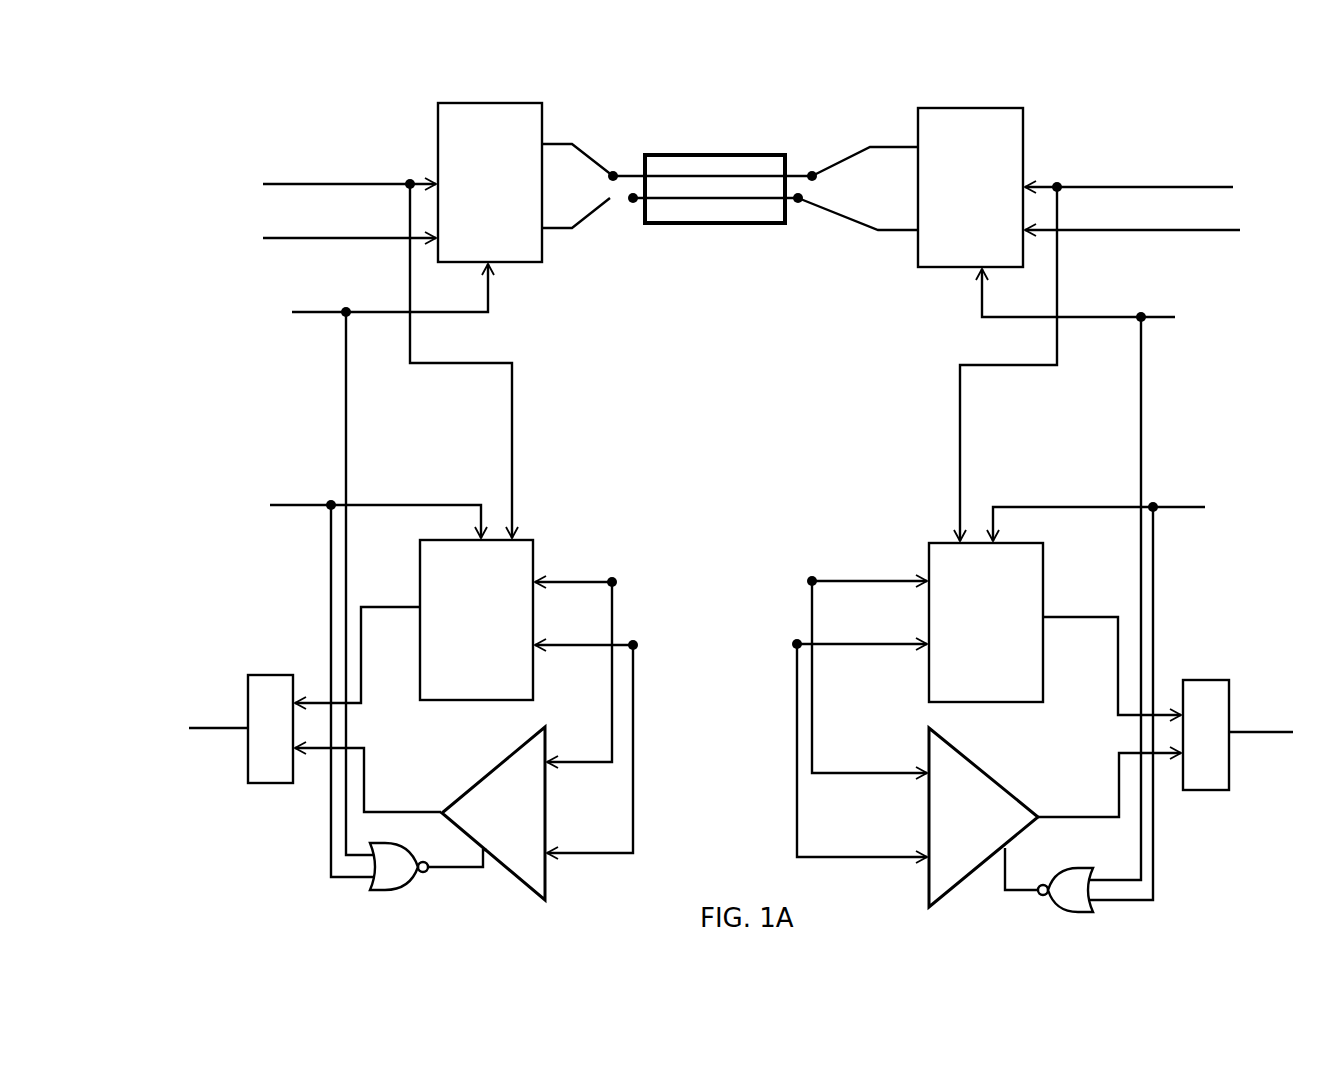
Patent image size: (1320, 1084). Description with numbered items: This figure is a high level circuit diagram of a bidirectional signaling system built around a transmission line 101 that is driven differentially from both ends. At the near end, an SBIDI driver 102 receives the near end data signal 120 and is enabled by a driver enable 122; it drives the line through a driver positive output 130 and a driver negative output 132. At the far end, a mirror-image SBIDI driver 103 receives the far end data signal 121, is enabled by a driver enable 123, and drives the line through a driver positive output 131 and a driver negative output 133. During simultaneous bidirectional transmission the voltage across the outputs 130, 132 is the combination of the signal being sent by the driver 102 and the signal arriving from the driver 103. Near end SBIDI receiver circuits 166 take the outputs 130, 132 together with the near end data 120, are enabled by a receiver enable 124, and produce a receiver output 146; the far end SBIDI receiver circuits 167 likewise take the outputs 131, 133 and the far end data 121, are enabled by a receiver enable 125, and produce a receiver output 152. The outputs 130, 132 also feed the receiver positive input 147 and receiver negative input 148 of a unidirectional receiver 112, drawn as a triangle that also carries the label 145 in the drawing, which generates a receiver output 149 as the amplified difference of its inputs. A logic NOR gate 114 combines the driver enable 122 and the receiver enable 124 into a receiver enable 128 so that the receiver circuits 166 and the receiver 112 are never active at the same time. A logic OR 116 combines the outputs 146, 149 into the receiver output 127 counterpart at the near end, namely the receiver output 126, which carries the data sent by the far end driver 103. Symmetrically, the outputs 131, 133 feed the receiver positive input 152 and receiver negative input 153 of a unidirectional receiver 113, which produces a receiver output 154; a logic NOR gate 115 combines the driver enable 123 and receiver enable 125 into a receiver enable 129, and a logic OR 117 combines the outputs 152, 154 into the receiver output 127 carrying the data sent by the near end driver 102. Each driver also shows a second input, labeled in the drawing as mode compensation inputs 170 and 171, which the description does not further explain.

The transmission line 101 is at (722, 153).
The SBIDI driver 102 is at (434, 152).
The SBIDI driver 103 is at (913, 252).
The unidirectional receiver 112 is at (535, 878).
The unidirectional receiver 113 is at (925, 878).
The logic NOR gate 114 is at (385, 893).
The logic NOR gate 115 is at (1075, 912).
The logic OR 116 is at (259, 786).
The logic OR 117 is at (1196, 680).
The near end data signal 120 is at (321, 152).
The far end data signal 121 is at (1173, 183).
The driver enable 122 is at (322, 318).
The driver enable 123 is at (1090, 320).
The receiver enable 124 is at (366, 498).
The receiver enable 125 is at (1043, 505).
The receiver output 126 is at (197, 722).
The receiver output 127 is at (1238, 726).
The receiver enable 128 is at (472, 870).
The receiver enable 129 is at (1022, 880).
The driver positive output 130 is at (578, 144).
The driver positive output 131 is at (828, 168).
The driver negative output 132 is at (578, 224).
The driver negative output 133 is at (845, 210).
The near end unidirectional receiver 145 is at (493, 808).
The receiver output 146 is at (362, 604).
The receiver positive input 147 is at (558, 758).
The receiver negative input 148 is at (554, 848).
The receiver output 149 is at (393, 807).
The receiver output / receiver positive input 152 is at (1068, 618).
The receiver negative input 153 is at (840, 852).
The receiver output 154 is at (1041, 810).
The SBIDI receiver circuits 166 is at (530, 538).
The SBIDI receiver circuits 167 is at (1043, 649).
The near end mode compensation input 170 is at (292, 246).
The far end mode compensation input 171 is at (1112, 238).